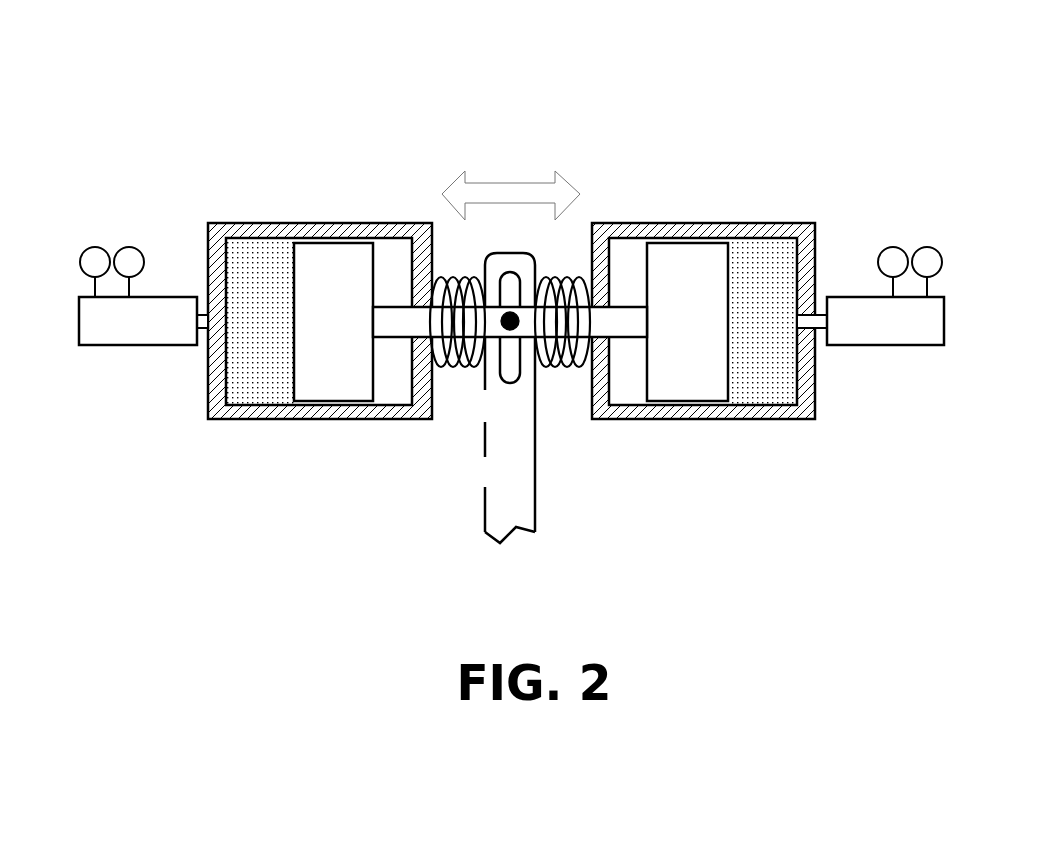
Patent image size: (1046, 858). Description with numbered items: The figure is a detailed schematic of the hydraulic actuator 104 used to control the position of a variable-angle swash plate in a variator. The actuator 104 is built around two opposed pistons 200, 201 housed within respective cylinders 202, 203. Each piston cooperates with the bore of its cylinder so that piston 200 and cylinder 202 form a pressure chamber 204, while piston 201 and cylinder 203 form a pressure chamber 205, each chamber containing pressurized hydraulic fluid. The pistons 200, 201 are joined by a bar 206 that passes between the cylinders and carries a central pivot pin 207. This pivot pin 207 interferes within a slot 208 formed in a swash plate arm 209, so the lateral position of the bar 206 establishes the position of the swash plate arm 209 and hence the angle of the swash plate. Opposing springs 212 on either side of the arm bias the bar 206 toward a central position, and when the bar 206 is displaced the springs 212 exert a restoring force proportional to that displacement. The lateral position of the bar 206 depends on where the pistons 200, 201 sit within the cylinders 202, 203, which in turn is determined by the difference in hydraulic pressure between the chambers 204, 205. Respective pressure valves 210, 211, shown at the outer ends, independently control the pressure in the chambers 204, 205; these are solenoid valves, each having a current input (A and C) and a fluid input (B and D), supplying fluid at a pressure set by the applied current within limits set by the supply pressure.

The hydraulic actuator 104 is at (608, 97).
The piston 200 is at (351, 252).
The piston 201 is at (683, 252).
The cylinder 202 is at (292, 222).
The cylinder 203 is at (754, 232).
The pressure chamber 204 is at (262, 385).
The pressure chamber 205 is at (758, 400).
The bar 206 is at (407, 312).
The central pivot pin 207 is at (503, 333).
The slot 208 is at (508, 385).
The swash plate arm 209 is at (502, 495).
The pressure valve 210 is at (140, 332).
The pressure valve 211 is at (880, 332).
The springs 212 is at (558, 370).